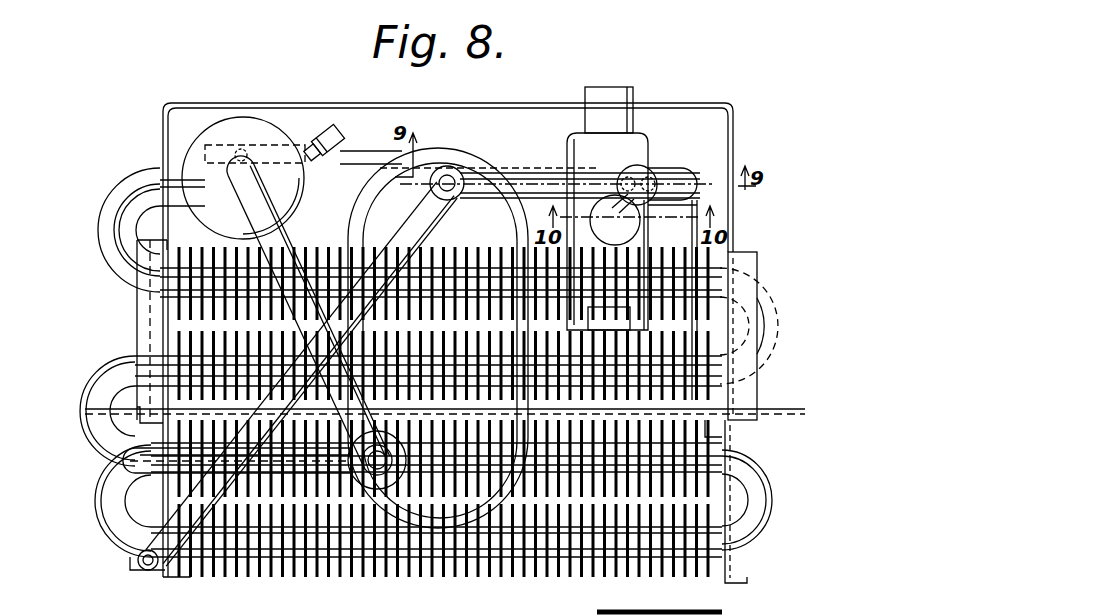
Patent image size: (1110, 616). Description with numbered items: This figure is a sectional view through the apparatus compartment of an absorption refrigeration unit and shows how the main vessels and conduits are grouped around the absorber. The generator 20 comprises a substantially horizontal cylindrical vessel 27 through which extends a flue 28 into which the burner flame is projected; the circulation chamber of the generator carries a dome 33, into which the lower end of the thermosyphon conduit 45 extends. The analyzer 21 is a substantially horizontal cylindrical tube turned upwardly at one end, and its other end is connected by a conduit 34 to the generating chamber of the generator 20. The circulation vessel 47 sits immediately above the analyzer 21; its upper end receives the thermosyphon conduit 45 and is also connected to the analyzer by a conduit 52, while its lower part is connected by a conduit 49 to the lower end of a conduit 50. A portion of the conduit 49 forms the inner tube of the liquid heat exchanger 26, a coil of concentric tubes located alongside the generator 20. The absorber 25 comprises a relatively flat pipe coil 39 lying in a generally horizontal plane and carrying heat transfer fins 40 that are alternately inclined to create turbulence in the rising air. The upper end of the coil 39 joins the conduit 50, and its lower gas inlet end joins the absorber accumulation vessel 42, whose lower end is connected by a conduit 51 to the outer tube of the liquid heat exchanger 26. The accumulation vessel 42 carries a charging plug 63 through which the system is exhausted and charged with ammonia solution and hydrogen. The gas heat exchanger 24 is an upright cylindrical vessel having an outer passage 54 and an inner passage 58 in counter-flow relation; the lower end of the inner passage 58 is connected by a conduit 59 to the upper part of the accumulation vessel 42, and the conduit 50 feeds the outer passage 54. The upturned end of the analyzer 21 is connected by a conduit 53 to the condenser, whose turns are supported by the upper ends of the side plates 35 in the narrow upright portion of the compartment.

The generator 20 is at (640, 130).
The analyzer 21 is at (547, 173).
The gas heat exchanger 24 is at (366, 490).
The absorber 25 is at (528, 548).
The liquid heat exchanger 26 is at (512, 223).
The cylindrical vessel 27 is at (577, 132).
The flue 28 is at (624, 97).
The dome 33 is at (651, 239).
The conduit 34 is at (697, 208).
The side plates 35 is at (728, 568).
The absorber coil 39 is at (105, 217).
The heat transfer fins 40 is at (450, 250).
The absorber accumulation vessel 42 is at (300, 195).
The thermosyphon conduit 45 is at (602, 230).
The circulation vessel 47 is at (643, 176).
The conduit 49 is at (165, 180).
The conduit 50 is at (106, 476).
The conduit 51 is at (246, 147).
The conduit 52 is at (683, 174).
The conduit 53 is at (440, 205).
The outer passage 54 is at (345, 460).
The inner passage 58 is at (370, 442).
The conduit 59 is at (288, 236).
The charging plug 63 is at (330, 128).